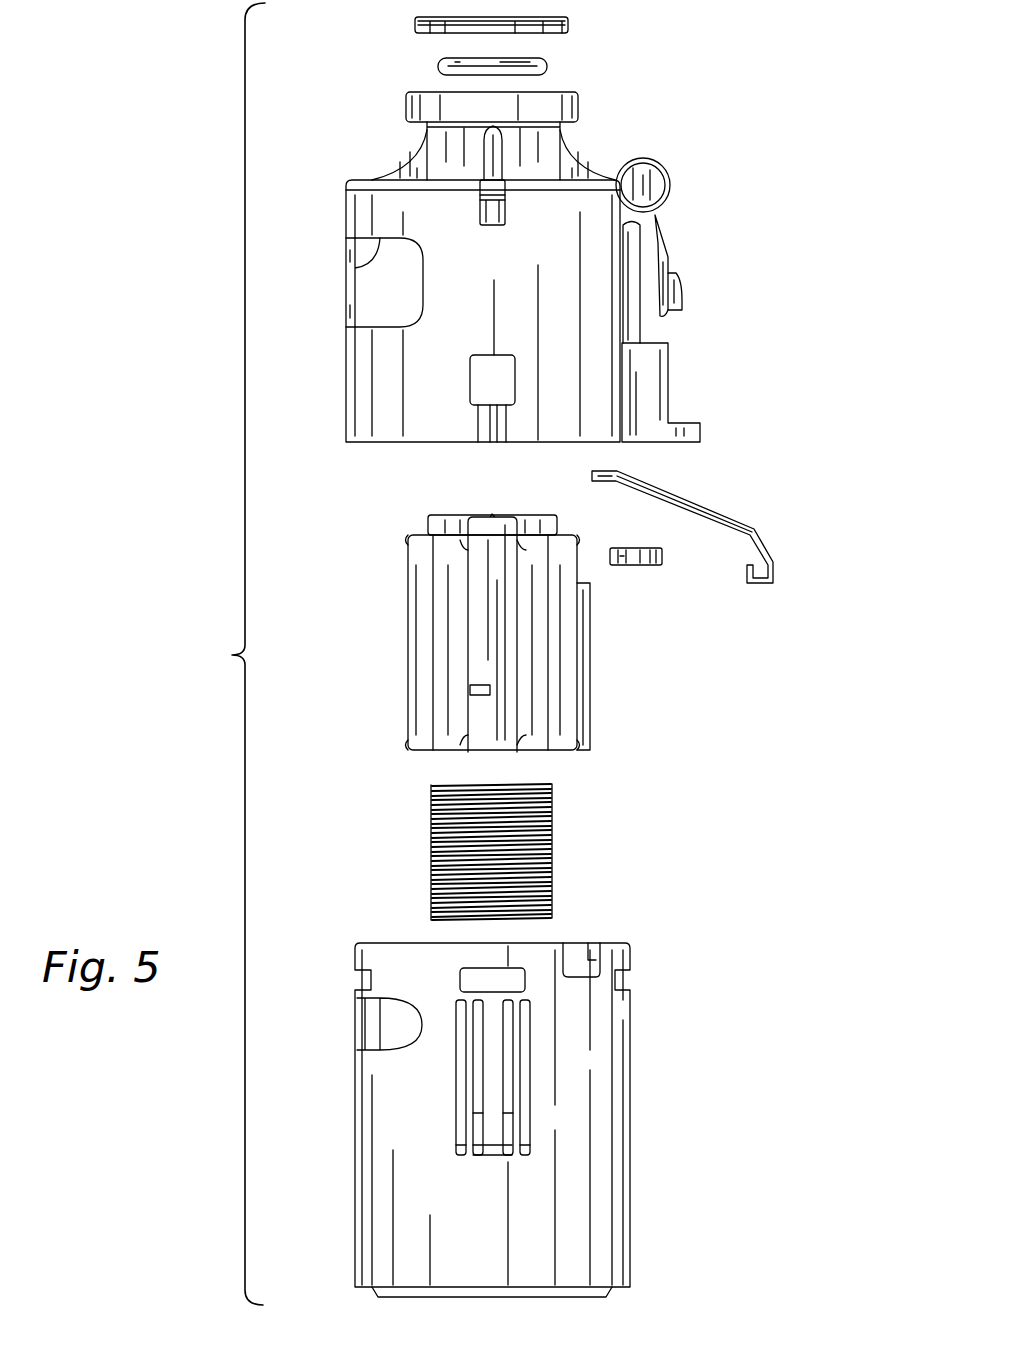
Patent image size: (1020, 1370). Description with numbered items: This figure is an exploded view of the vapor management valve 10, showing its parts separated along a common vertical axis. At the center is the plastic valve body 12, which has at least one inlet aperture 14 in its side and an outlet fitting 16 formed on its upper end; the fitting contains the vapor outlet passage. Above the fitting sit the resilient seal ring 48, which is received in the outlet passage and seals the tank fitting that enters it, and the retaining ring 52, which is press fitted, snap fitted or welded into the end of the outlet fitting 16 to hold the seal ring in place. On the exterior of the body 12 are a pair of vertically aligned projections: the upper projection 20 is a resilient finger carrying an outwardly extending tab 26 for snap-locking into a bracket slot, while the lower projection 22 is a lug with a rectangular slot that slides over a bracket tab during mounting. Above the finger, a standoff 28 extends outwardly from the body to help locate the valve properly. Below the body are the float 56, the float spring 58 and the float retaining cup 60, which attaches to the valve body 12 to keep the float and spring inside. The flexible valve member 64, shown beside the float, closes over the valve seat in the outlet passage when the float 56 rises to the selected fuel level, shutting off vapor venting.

The vapor management valve 10 is at (231, 654).
The valve body 12 is at (346, 352).
The inlet aperture 14 is at (370, 270).
The outlet fitting 16 is at (535, 148).
The upper projection 20 is at (660, 230).
The lower projection 22 is at (660, 375).
The tab 26 is at (683, 292).
The standoff 28 is at (657, 176).
The seal ring 48 is at (548, 60).
The retaining ring 52 is at (540, 17).
The float 56 is at (590, 695).
The float spring 58 is at (555, 860).
The float retaining cup 60 is at (630, 1082).
The flexible valve member 64 is at (686, 495).